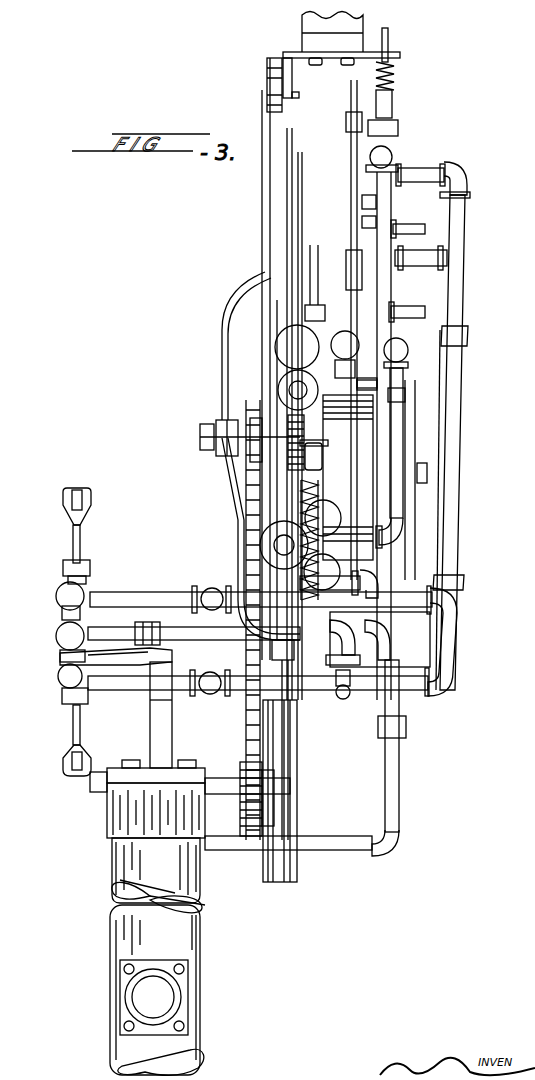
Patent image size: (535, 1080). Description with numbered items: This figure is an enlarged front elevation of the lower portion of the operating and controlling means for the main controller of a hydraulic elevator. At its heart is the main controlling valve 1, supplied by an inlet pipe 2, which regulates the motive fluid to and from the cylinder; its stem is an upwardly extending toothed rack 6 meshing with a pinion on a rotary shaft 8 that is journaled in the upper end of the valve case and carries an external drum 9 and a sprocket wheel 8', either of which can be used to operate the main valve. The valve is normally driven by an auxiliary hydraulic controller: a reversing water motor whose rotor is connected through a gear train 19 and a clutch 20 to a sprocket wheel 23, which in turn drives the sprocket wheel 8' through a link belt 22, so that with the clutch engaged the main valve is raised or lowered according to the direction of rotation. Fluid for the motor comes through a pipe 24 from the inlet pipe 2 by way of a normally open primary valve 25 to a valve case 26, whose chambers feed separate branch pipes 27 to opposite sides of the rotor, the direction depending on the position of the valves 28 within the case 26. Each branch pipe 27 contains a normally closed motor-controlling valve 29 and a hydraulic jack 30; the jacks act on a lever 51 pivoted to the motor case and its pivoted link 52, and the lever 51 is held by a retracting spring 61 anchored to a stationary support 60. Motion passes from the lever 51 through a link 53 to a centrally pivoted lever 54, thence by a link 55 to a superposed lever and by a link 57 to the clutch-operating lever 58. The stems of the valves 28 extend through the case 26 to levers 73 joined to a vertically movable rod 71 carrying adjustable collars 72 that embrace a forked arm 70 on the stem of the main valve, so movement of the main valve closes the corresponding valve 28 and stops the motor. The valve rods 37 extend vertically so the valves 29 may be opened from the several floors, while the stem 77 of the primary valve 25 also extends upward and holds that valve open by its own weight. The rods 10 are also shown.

The main controlling valve 1 is at (196, 906).
The inlet pipe 2 is at (128, 998).
The toothed rack 6 is at (155, 742).
The rotary shaft 8 is at (178, 831).
The sprocket wheel 8' is at (242, 792).
The external drum 9 is at (292, 790).
The rod 10 is at (290, 175).
The gear train 19 is at (290, 432).
The clutch 20 is at (218, 446).
The link belt 22 is at (246, 713).
The sprocket wheel 23 is at (256, 418).
The pipe 24 is at (190, 630).
The primary valve 25 is at (366, 640).
The valve case 26 is at (60, 634).
The branch pipes 27 is at (408, 360).
The valves 28 is at (60, 586).
The motor-controlling valve 29 is at (400, 158).
The hydraulic jack 30 is at (297, 347).
The valve rods 37 is at (392, 42).
The lever 51 is at (324, 455).
The pivoted link 52 is at (322, 338).
The link 53 is at (300, 573).
The centrally pivoted lever 54 is at (262, 614).
The link 55 is at (262, 302).
The link 57 is at (232, 292).
The clutch-operating lever 58 is at (212, 422).
The stationary support 60 is at (331, 643).
The retracting spring 61 is at (322, 520).
The forked arm 70 is at (100, 660).
The vertically movable rod 71 is at (64, 608).
The adjustable shoulders or collars 72 is at (64, 652).
The levers 73 is at (78, 490).
The stem 77 is at (351, 195).